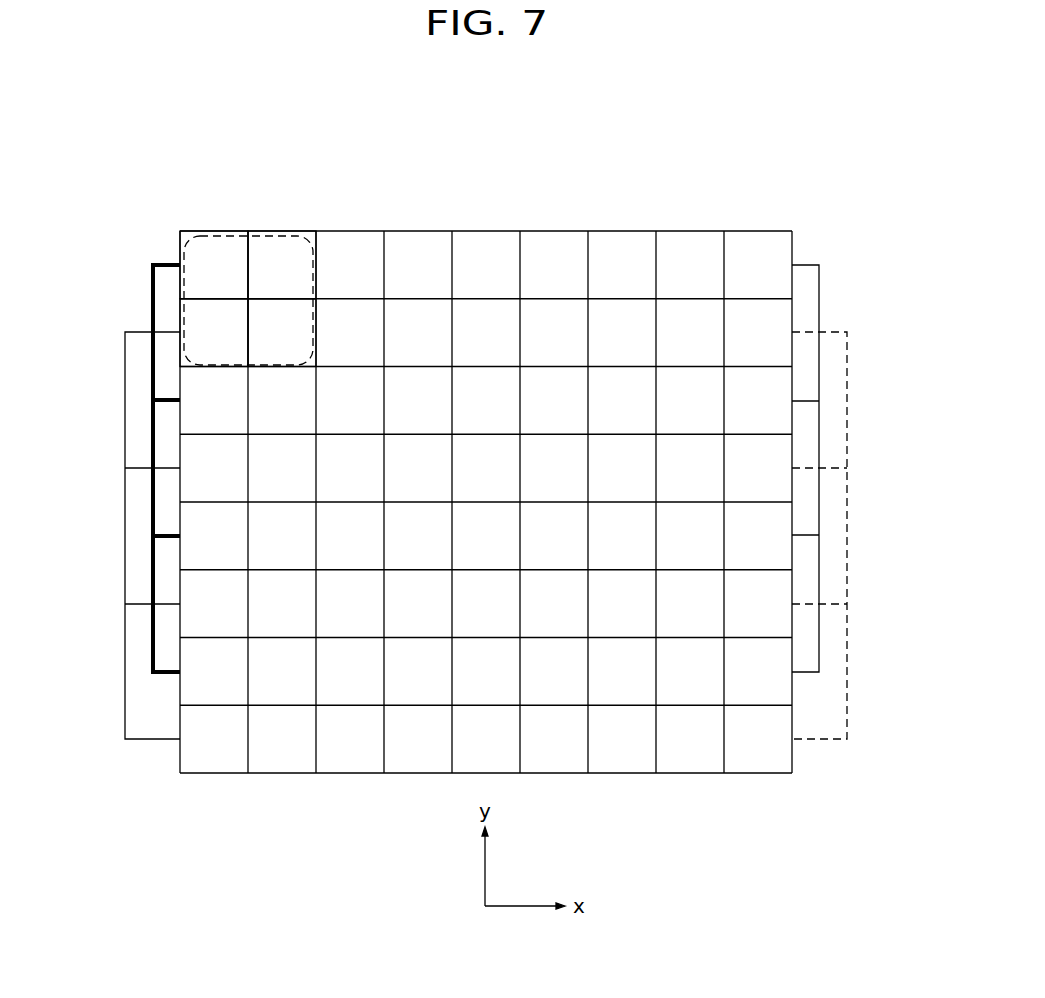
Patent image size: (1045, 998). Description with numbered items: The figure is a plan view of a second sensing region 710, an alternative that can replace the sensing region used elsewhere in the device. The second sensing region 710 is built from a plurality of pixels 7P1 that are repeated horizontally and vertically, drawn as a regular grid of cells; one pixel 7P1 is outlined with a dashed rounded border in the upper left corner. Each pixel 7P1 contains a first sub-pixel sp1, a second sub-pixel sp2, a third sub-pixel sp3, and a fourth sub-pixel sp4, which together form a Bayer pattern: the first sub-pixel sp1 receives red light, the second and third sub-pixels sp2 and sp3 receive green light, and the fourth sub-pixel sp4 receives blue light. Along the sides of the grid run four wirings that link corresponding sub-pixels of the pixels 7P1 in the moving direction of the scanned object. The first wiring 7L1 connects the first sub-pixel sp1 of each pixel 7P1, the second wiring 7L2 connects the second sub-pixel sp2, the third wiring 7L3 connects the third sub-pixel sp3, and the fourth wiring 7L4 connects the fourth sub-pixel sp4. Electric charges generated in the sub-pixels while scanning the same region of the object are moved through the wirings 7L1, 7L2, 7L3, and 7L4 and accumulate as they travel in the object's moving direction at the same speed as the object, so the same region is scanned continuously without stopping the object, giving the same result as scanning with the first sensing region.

The second sensing region 710 is at (182, 208).
The pixel 7P1 is at (312, 238).
The first sub-pixel sp1 is at (235, 277).
The second sub-pixel sp2 is at (301, 277).
The third sub-pixel sp3 is at (235, 346).
The fourth sub-pixel sp4 is at (301, 346).
The first wiring 7L1 is at (151, 291).
The second wiring 7L2 is at (820, 292).
The third wiring 7L3 is at (125, 361).
The fourth wiring 7L4 is at (847, 360).